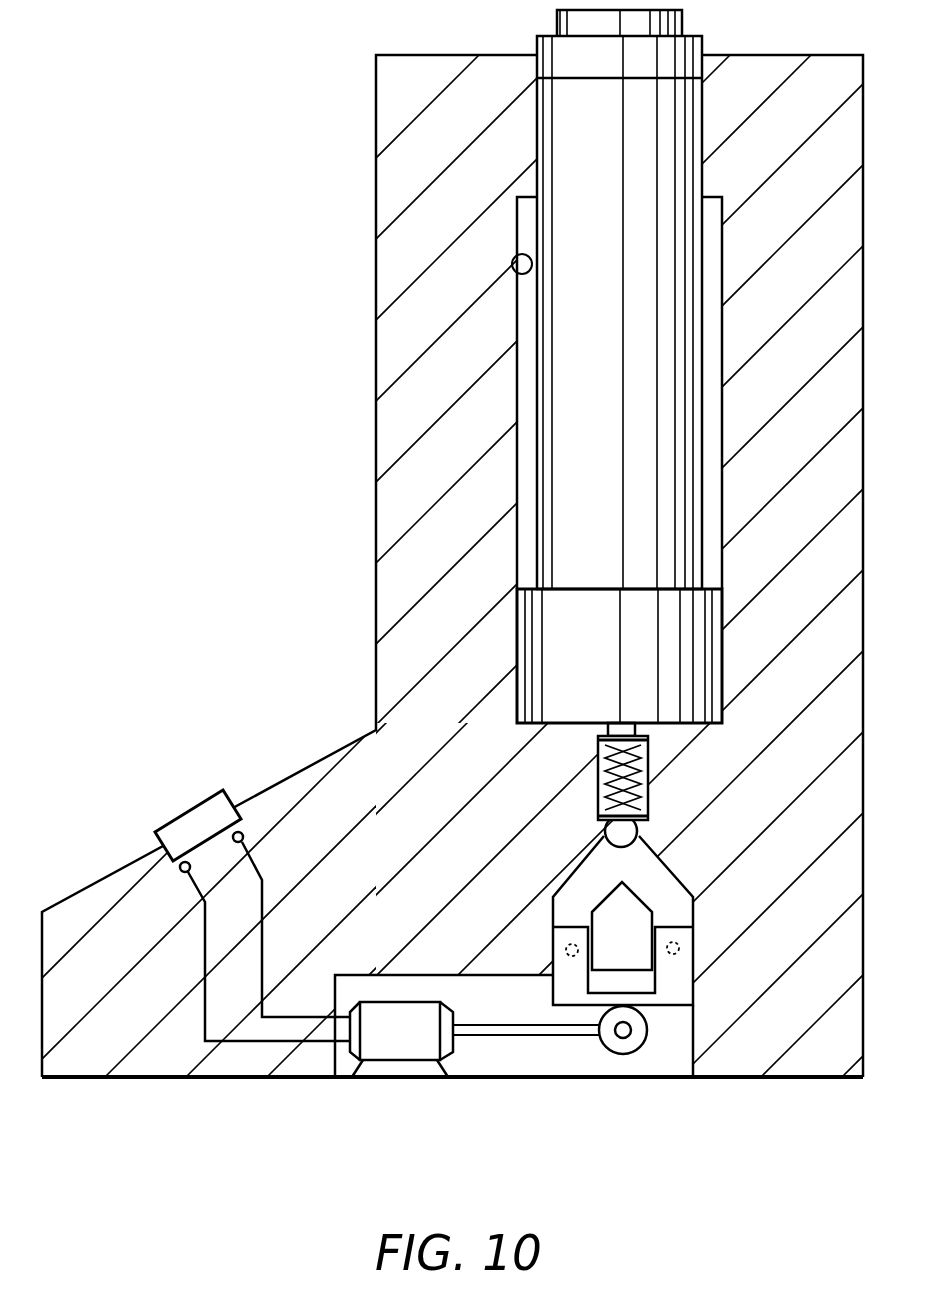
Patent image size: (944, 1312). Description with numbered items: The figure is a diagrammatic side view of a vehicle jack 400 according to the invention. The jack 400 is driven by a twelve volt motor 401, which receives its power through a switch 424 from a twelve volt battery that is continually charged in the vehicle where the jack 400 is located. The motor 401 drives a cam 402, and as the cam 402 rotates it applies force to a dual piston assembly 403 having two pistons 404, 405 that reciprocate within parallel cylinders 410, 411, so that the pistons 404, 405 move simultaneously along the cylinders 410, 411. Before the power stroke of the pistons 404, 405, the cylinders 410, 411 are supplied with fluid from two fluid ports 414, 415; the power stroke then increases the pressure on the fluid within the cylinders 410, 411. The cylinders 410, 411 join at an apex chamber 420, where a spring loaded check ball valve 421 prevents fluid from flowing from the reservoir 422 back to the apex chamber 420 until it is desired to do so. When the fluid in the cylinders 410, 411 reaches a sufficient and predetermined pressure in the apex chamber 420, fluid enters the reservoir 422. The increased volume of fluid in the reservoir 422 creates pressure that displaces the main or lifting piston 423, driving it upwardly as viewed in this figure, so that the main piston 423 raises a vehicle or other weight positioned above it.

The jack 400 is at (223, 510).
The motor 401 is at (400, 1038).
The cam 402 is at (623, 1054).
The dual piston assembly 403 is at (555, 1035).
The piston 404 is at (565, 935).
The piston 405 is at (678, 935).
The cylinder 410 is at (695, 915).
The cylinder 411 is at (556, 918).
The fluid port 414 is at (563, 947).
The fluid port 415 is at (676, 954).
The apex chamber 420 is at (620, 856).
The spring loaded check ball valve 421 is at (603, 830).
The reservoir 422 is at (513, 265).
The main piston 423 is at (558, 382).
The switch 424 is at (173, 823).